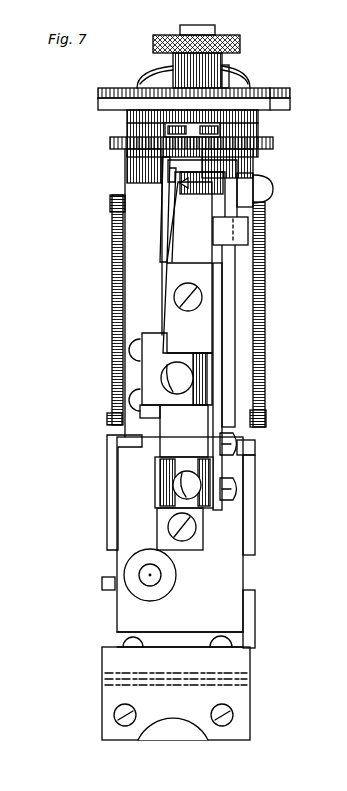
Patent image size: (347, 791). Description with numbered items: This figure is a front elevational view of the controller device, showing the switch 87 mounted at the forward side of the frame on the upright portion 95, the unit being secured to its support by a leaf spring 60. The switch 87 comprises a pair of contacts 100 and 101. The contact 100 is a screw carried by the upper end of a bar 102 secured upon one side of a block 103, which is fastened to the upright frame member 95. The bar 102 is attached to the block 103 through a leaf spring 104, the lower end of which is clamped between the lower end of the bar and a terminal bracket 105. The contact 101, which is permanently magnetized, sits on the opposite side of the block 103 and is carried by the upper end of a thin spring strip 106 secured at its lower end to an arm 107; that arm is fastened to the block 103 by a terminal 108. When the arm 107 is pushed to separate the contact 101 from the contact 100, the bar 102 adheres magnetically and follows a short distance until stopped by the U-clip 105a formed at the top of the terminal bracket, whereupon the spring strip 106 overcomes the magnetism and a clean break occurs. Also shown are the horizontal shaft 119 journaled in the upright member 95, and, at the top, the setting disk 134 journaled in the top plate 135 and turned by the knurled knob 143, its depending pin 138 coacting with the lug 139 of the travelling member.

The leaf spring 60 is at (117, 683).
The switch 87 is at (155, 168).
The upright portion 95 is at (178, 620).
The contact 100 is at (245, 176).
The contact 101 is at (163, 200).
The bar 102 is at (227, 166).
The block 103 is at (200, 317).
The leaf spring 104 is at (262, 417).
The terminal bracket 105 is at (215, 337).
The U-clip 105a is at (248, 233).
The spring strip 106 is at (165, 218).
The arm 107 is at (170, 157).
The terminal 108 is at (150, 372).
The horizontal shaft 119 is at (150, 575).
The disk 134 is at (268, 90).
The top plate 135 is at (108, 105).
The depending pin 138 is at (258, 128).
The lug 139 is at (150, 127).
The knurled knob 143 is at (218, 62).